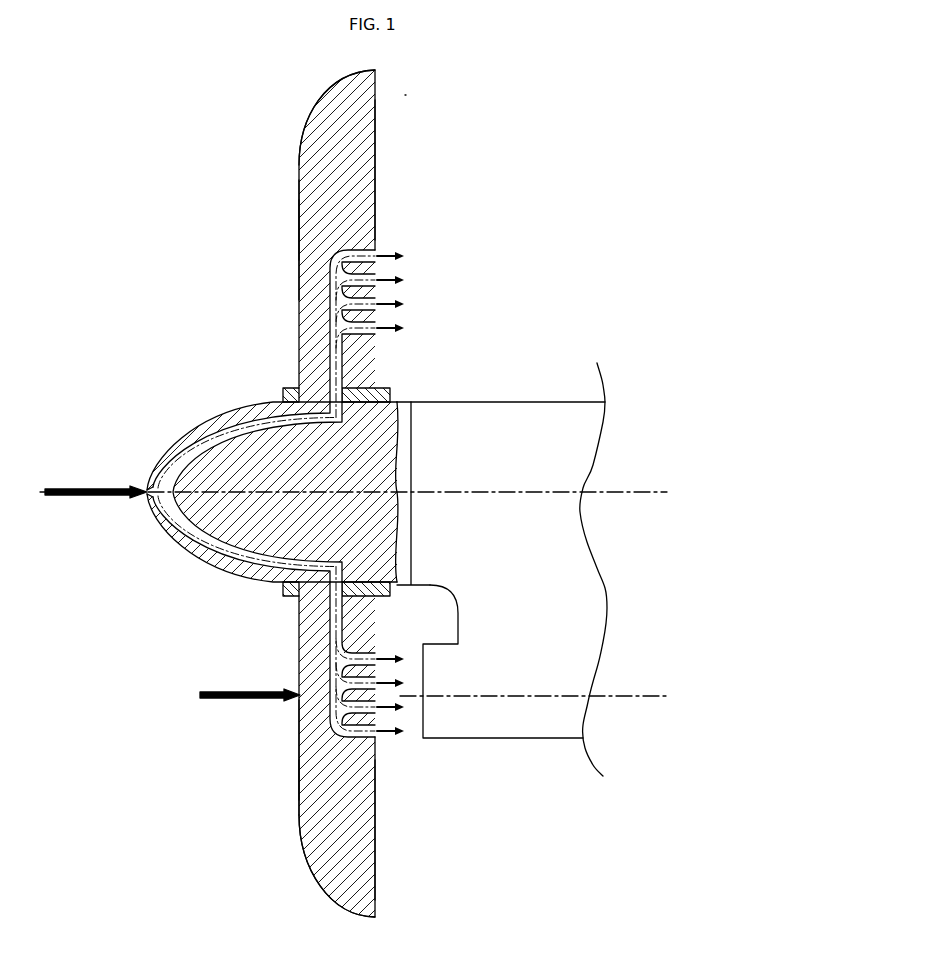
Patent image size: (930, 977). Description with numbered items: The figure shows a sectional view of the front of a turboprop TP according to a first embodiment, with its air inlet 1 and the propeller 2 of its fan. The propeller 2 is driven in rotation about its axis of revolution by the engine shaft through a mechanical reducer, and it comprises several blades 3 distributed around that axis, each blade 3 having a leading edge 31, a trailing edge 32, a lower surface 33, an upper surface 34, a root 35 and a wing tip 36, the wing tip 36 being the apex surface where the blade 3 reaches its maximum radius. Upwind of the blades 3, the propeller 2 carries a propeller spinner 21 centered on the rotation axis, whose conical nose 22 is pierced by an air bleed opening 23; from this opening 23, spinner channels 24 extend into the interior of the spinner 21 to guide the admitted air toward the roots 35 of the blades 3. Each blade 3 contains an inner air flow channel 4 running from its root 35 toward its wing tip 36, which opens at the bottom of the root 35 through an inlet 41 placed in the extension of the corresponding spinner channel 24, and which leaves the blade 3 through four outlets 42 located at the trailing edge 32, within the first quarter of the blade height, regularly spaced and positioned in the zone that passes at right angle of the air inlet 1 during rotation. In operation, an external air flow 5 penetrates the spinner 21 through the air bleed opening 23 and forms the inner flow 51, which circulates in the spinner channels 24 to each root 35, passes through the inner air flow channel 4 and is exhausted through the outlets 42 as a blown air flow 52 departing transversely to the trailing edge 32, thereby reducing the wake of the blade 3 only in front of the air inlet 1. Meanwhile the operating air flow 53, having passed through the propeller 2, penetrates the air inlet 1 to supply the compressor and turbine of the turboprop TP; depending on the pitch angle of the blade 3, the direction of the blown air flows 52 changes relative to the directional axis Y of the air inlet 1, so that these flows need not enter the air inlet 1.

The air inlet 1 is at (437, 717).
The propeller 2 is at (420, 77).
The blade 3 is at (303, 492).
The inner air flow channel 4 is at (333, 467).
The external air flow 5 is at (95, 487).
The propeller spinner 21 is at (244, 492).
The conical nose 22 is at (148, 480).
The air bleed opening 23 is at (147, 503).
The spinner channels 24 is at (188, 440).
The leading edge 31 is at (299, 200).
The trailing edge 32 is at (378, 148).
The lower surface 33 is at (316, 227).
The upper surface 34 is at (300, 800).
The root 35 is at (386, 390).
The wing tip 36 is at (327, 94).
The inlet 41 is at (332, 500).
The outlets 42 is at (376, 242).
The inner flow 51 is at (232, 560).
The blown air flow 52 is at (402, 262).
The operating air flow 53 is at (246, 700).
The turboprop TP is at (509, 405).
The directional axis of the air inlet Y is at (658, 693).